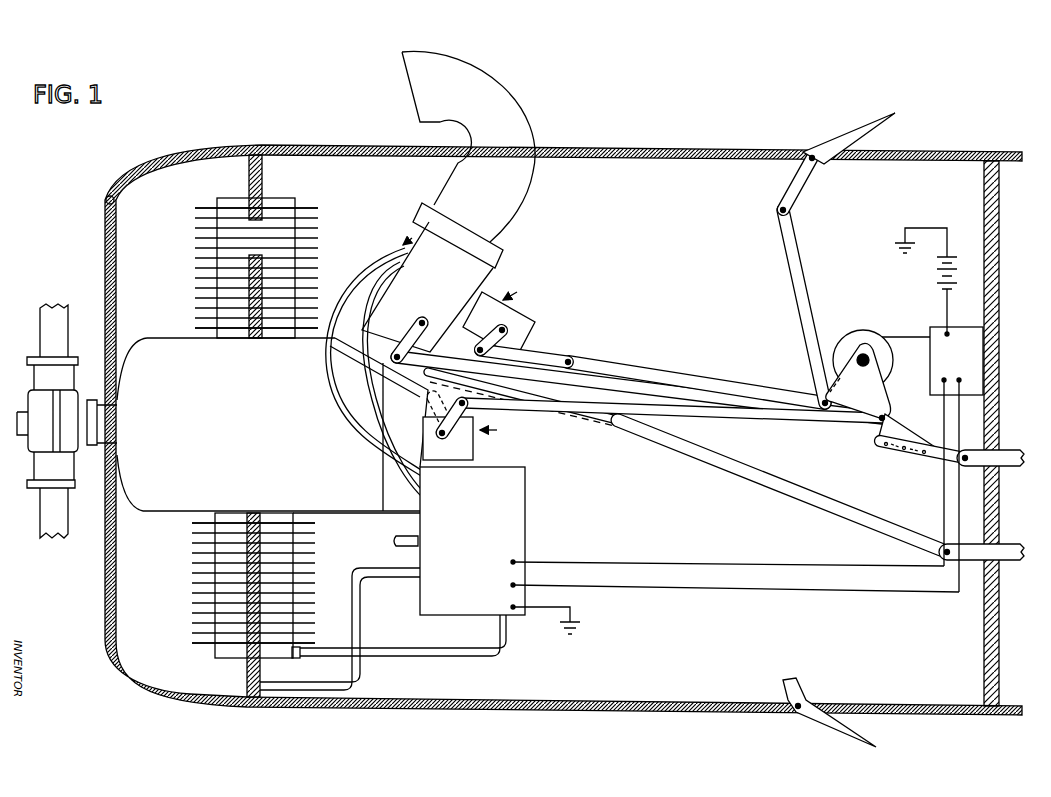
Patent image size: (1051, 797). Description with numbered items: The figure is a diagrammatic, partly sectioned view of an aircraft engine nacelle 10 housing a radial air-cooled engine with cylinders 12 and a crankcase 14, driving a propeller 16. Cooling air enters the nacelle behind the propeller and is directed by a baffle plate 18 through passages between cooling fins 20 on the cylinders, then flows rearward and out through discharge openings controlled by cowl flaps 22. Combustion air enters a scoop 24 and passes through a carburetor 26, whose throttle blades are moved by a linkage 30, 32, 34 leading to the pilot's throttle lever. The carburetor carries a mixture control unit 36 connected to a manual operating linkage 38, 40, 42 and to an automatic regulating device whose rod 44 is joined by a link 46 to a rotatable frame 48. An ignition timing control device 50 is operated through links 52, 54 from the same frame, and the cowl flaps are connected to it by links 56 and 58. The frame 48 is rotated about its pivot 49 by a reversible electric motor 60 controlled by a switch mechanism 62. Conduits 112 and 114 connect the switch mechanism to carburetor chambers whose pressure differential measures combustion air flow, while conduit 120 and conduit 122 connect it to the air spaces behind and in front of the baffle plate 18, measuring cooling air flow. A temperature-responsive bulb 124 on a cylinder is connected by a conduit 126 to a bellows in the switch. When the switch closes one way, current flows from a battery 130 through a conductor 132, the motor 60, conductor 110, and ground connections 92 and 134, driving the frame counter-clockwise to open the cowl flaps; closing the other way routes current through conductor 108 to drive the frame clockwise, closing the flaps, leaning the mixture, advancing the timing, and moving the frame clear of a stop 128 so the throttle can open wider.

The aircraft engine nacelle 10 is at (166, 698).
The cylinders 12 is at (217, 292).
The crankcase 14 is at (160, 512).
The propeller 16 is at (40, 328).
The baffle plate 18 is at (262, 180).
The cooling fins 20 is at (310, 208).
The cowl flaps 22 is at (868, 125).
The scoop 24 is at (513, 100).
The carburetor 26 is at (445, 278).
The linkage 30 is at (414, 320).
The linkage 32 is at (826, 440).
The linkage 34 is at (1022, 470).
The mixture control unit 36 is at (530, 319).
The manual operating linkage 38 is at (496, 333).
The manual operating linkage 40 is at (806, 497).
The manual operating linkage 42 is at (1020, 550).
The rod 44 is at (560, 348).
The link 46 is at (658, 371).
The rotatable frame 48 is at (893, 412).
The pivot 49 is at (858, 352).
The ignition timing control device 50 is at (497, 463).
The link 52 is at (452, 405).
The link 54 is at (508, 408).
The link 56 is at (805, 204).
The link 58 is at (808, 275).
The electric motor 60 is at (873, 331).
The switch mechanism 62 is at (527, 532).
The ground connection 92 is at (576, 615).
The conductor 108 is at (778, 566).
The conductor 110 is at (905, 596).
The conduit 112 is at (341, 412).
The conduit 114 is at (378, 475).
The conduit 120 is at (356, 529).
The conduit 122 is at (362, 625).
The bulb 124 is at (296, 658).
The conduit 126 is at (421, 660).
The stop 128 is at (886, 447).
The battery 130 is at (937, 273).
The conductor 132 is at (947, 303).
The ground connection 134 is at (897, 245).